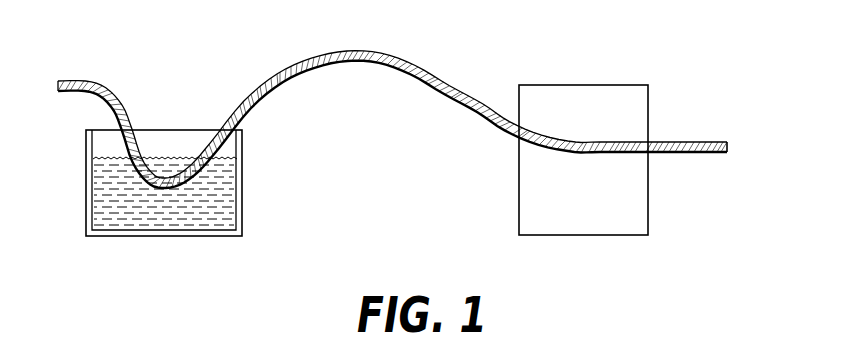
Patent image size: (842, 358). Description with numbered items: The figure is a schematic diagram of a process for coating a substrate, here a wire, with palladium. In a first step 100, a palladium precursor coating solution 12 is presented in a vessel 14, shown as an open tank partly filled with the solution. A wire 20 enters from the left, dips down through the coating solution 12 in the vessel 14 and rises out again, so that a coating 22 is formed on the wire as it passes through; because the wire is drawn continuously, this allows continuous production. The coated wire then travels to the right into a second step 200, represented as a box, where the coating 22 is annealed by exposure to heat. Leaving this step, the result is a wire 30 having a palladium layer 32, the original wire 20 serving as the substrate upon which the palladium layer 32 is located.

The coating step 100 is at (86, 151).
The palladium precursor coating solution 12 is at (88, 194).
The vessel 14 is at (162, 237).
The wire 20 is at (101, 80).
The coating 22 is at (349, 50).
The annealing step 200 is at (582, 84).
The palladium layer 32 is at (682, 142).
The wire having a palladium layer 30 is at (728, 150).